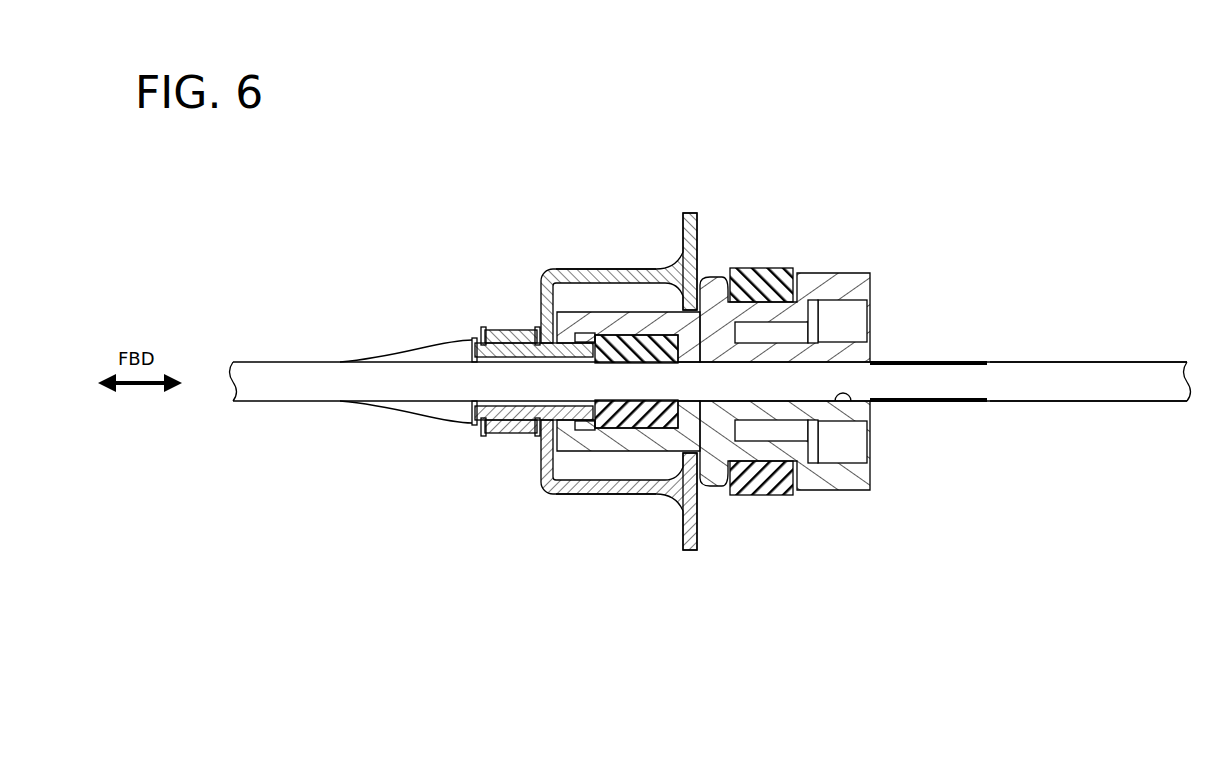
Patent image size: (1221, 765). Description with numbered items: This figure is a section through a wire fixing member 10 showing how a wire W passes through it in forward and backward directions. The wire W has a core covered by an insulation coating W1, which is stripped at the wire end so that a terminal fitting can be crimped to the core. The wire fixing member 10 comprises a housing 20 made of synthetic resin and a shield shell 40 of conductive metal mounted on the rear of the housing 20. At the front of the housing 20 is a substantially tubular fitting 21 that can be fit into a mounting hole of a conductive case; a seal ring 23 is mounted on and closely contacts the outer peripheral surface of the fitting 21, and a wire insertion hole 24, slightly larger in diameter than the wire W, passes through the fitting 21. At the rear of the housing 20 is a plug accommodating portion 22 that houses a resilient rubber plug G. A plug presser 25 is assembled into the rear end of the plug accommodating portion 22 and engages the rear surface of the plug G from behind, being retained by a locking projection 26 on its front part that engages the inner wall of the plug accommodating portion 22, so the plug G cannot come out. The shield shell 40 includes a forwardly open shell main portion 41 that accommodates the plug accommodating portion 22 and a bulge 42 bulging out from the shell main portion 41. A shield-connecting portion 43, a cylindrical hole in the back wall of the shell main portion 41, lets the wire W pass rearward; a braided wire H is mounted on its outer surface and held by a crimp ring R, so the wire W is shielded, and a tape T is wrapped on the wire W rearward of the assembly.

The wire fixing member 10 is at (662, 376).
The housing 20 is at (804, 356).
The fitting 21 is at (866, 272).
The plug accommodating portion 22 is at (647, 450).
The seal ring 23 is at (756, 268).
The wire insertion hole 24 is at (849, 402).
The plug presser 25 is at (512, 422).
The locking projection 26 is at (583, 322).
The shield shell 40 is at (558, 253).
The shell main portion 41 is at (656, 266).
The bulge 42 is at (698, 226).
The shield-connecting portion 43 is at (510, 328).
The resilient plug G is at (617, 400).
The braided wire H is at (420, 347).
The crimp ring R is at (500, 332).
The tape T is at (940, 360).
The wire W is at (387, 412).
The insulation coating W1 is at (1122, 386).